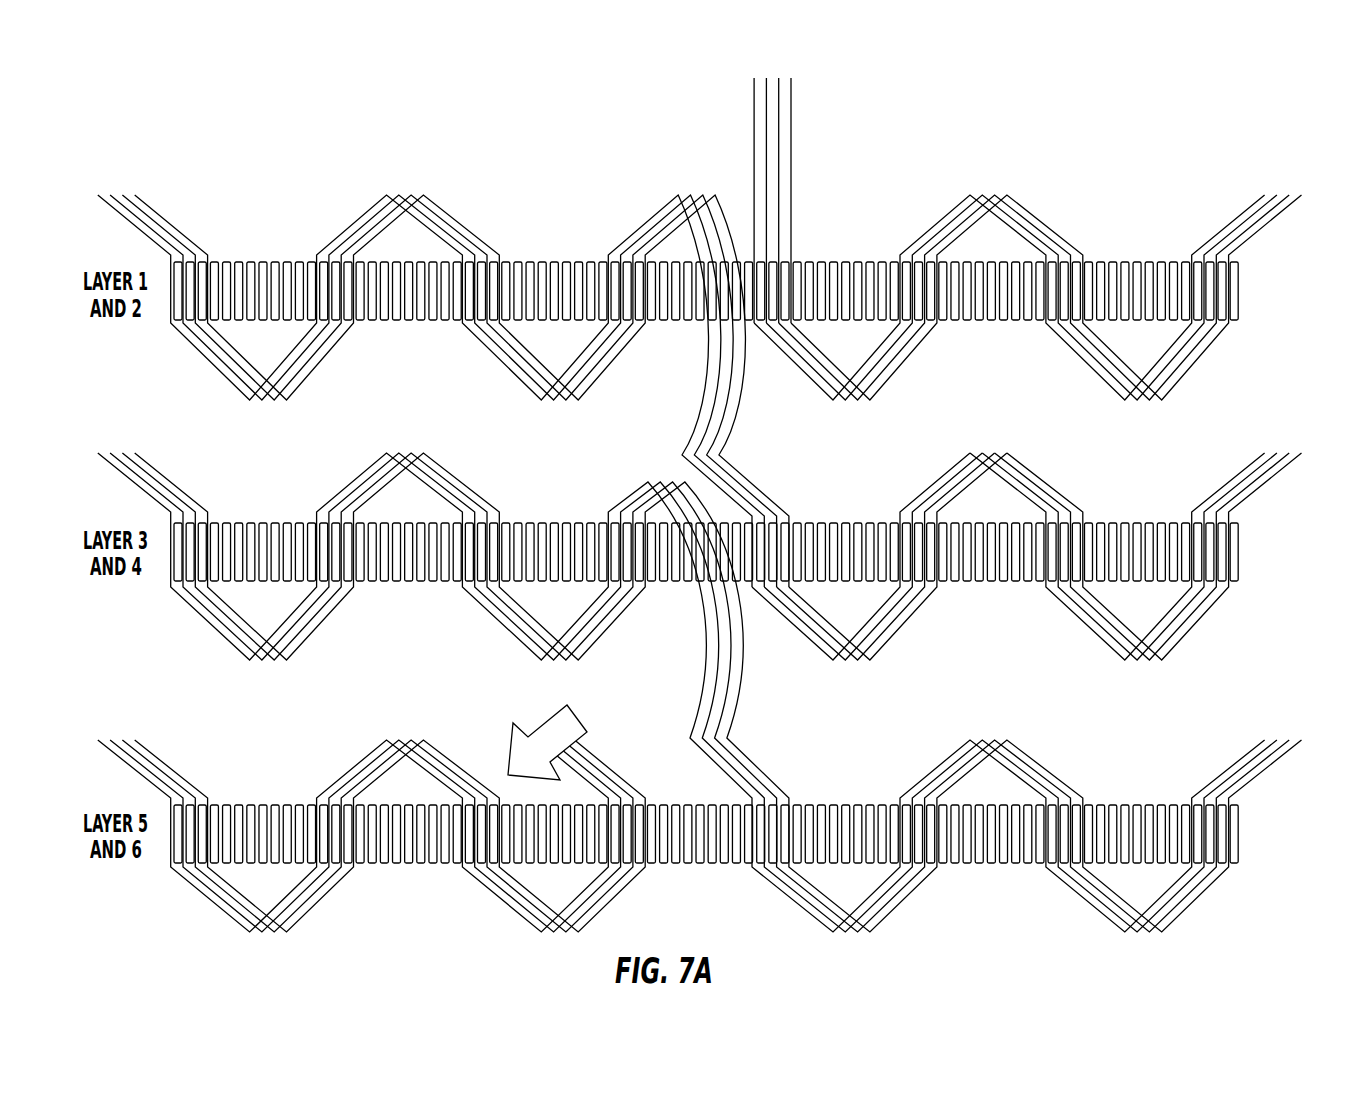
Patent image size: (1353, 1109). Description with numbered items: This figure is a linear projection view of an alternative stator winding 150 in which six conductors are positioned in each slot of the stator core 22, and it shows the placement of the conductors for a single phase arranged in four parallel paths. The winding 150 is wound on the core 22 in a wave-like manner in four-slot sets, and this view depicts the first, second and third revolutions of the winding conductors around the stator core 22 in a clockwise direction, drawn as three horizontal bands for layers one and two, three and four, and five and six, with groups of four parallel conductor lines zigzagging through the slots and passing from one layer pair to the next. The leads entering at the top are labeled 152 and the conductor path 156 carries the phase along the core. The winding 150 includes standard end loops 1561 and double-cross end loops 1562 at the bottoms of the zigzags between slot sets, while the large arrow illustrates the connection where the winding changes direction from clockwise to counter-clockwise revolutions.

The winding 150 is at (710, 501).
The input lead 152 is at (791, 130).
The coil conductor 156 is at (992, 193).
The standard end loops 1561 is at (846, 652).
The double-cross end loops 1562 is at (1143, 652).
The stator core 22 is at (1240, 288).